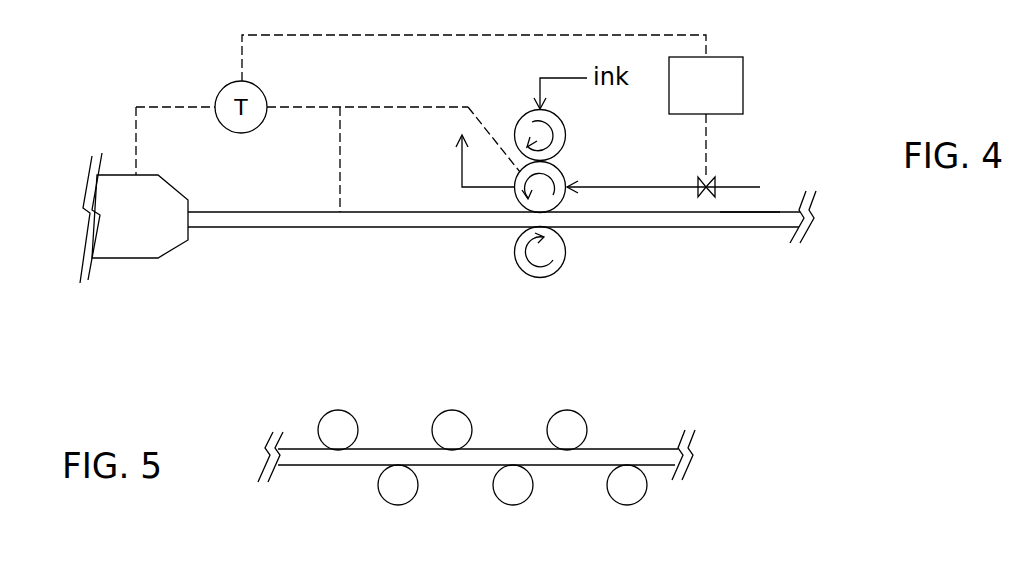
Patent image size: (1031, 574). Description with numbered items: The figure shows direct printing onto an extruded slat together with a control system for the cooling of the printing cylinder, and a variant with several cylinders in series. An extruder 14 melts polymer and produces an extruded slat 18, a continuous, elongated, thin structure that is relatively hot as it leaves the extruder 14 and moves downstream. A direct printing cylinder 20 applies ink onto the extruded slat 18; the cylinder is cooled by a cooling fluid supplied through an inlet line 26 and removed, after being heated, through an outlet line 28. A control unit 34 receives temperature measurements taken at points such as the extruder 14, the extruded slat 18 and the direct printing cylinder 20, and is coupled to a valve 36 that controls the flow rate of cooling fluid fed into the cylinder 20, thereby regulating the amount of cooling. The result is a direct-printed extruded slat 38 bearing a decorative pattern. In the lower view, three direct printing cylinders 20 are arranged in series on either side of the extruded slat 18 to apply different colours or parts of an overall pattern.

In FIG. 4, the extruder 14 is at (133, 260).
In FIG. 4, the extruded slat 18 is at (258, 228).
In FIG. 5, the extruded slat 18 is at (303, 466).
In FIG. 4, the direct printing cylinder 20 is at (548, 195).
In FIG. 5, the direct printing cylinder 20 is at (338, 410).
In FIG. 4, the inlet line 26 is at (627, 184).
In FIG. 4, the outlet line 28 is at (462, 165).
In FIG. 4, the control unit 34 is at (744, 82).
In FIG. 4, the valve 36 is at (712, 183).
In FIG. 4, the direct-printed extruded slat 38 is at (750, 203).